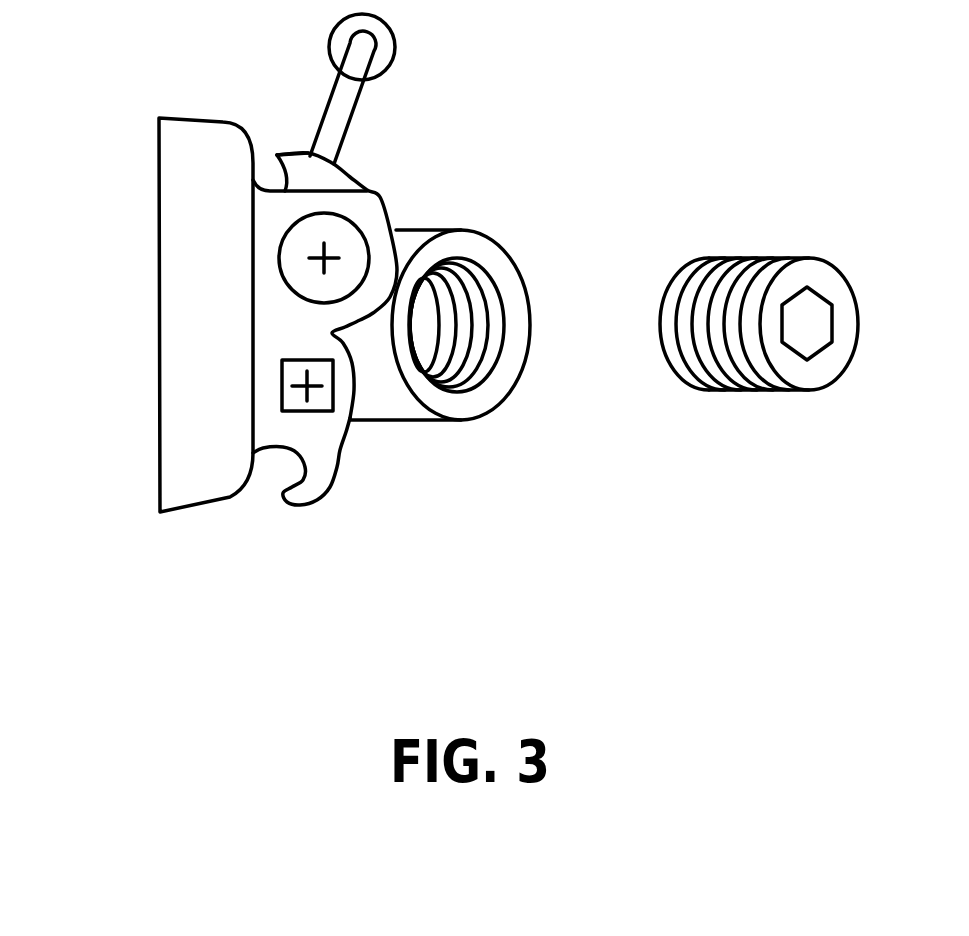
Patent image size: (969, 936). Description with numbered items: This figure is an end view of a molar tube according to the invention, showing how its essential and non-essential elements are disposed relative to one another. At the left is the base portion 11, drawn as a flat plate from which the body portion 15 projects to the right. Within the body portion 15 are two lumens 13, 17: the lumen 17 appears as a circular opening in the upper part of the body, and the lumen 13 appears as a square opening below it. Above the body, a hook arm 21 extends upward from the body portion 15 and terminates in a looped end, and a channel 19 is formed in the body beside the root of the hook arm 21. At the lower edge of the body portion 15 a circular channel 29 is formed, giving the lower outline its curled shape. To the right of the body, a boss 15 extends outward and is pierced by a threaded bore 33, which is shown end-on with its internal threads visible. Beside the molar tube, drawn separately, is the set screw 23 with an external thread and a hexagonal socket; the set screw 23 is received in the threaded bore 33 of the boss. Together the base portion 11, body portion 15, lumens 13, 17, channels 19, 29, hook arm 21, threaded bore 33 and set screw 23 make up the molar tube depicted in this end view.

The base portion 11 is at (183, 202).
The lumen 13 is at (282, 377).
The body portion 15 is at (303, 312).
The lumen 17 is at (350, 237).
The channel 19 is at (265, 167).
The hook arm 21 is at (352, 107).
The set screw 23 is at (800, 275).
The circular channel 29 is at (273, 473).
The threaded bore 33 is at (473, 360).